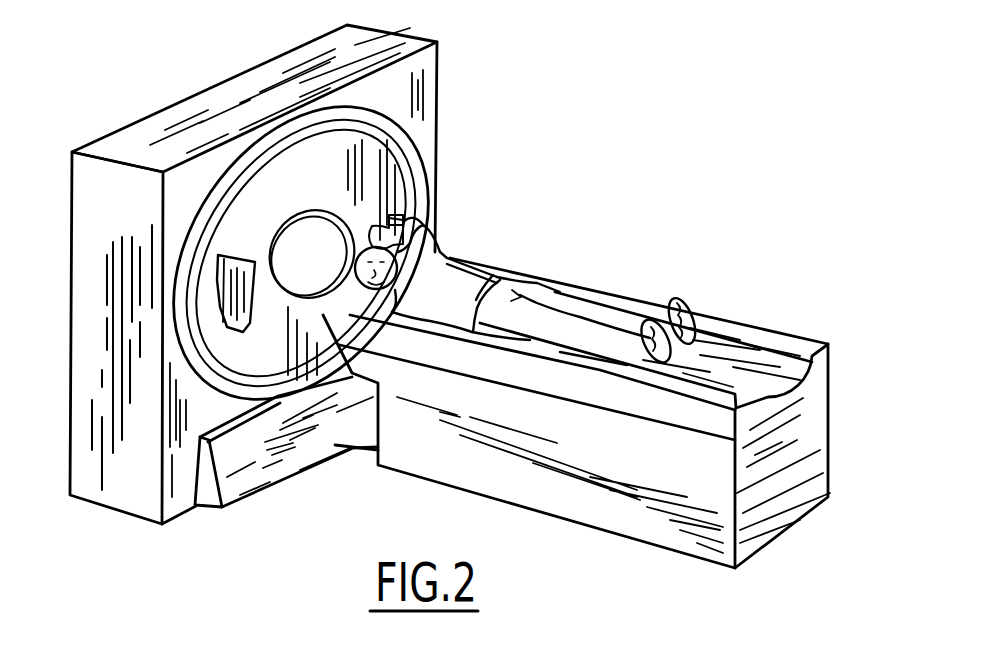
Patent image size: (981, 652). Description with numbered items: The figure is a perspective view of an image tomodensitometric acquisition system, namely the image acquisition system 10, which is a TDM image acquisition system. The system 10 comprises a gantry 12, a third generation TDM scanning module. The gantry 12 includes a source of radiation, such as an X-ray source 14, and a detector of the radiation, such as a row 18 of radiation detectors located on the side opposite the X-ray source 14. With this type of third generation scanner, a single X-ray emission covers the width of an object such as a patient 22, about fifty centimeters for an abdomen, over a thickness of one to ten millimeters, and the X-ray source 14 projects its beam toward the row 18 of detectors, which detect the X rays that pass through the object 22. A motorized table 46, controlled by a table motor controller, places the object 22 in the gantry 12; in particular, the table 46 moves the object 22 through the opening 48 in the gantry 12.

The image acquisition system 10 is at (351, 466).
The gantry 12 is at (243, 153).
The X-ray source 14 is at (417, 230).
The row of radiation detectors 18 is at (237, 332).
The patient 22 is at (471, 247).
The motorized table 46 is at (468, 466).
The opening 48 is at (350, 220).